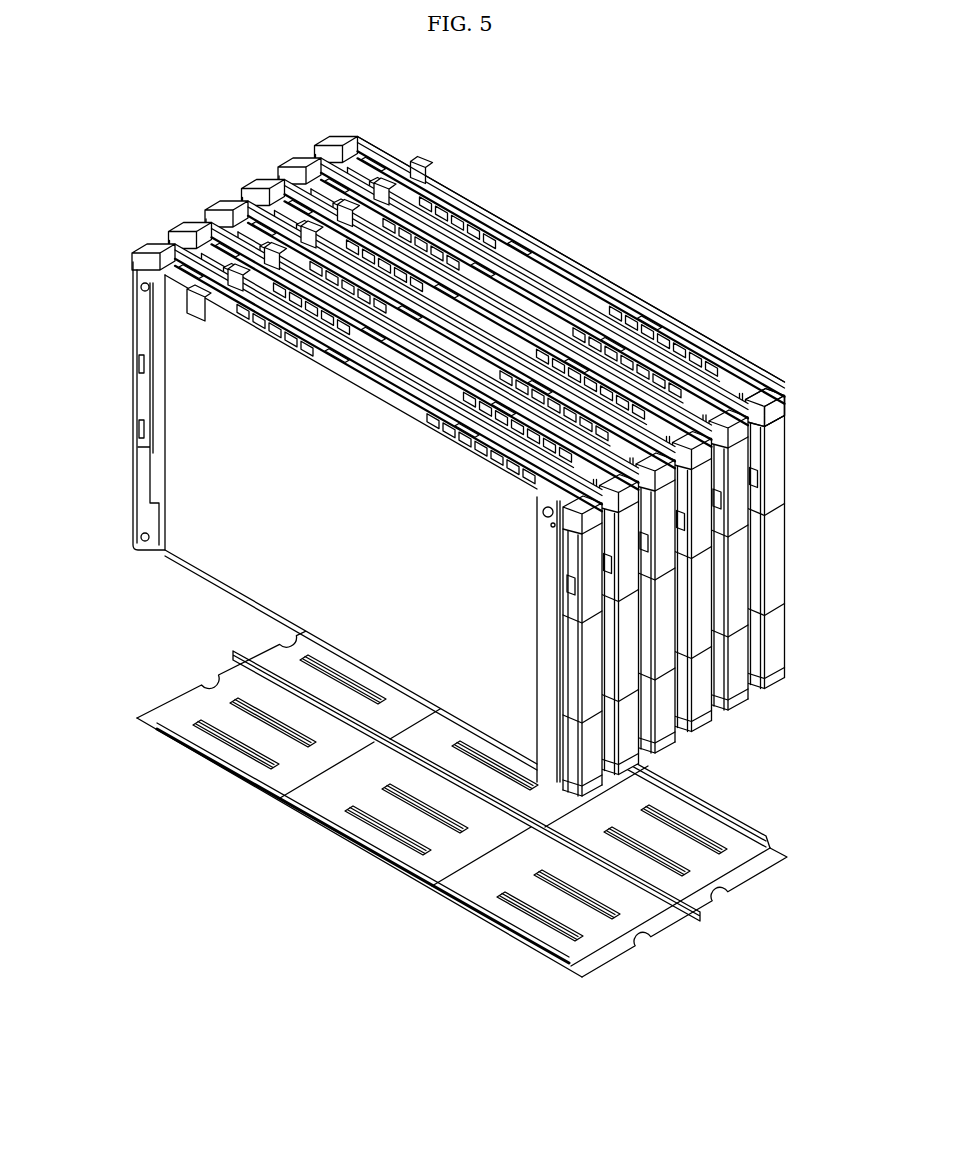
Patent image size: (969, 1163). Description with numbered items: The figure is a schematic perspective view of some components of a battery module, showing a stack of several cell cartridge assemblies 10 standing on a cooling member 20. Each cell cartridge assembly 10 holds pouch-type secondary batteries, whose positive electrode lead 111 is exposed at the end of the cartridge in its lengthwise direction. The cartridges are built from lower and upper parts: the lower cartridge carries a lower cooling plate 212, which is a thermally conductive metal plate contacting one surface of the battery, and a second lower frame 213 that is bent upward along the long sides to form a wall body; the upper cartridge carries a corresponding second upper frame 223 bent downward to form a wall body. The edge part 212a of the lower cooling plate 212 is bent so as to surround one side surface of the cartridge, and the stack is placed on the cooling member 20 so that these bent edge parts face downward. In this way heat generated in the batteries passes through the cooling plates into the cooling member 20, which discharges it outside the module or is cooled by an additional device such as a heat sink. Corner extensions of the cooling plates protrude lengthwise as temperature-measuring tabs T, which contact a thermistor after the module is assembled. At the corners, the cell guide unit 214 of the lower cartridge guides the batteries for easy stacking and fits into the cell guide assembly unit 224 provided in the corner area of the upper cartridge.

The cell cartridge assembly 10 is at (460, 440).
The cooling member 20 is at (265, 775).
The positive electrode lead 111 is at (786, 549).
The lower cooling plate 212 is at (178, 405).
The edge part of the lower cooling plate 212a is at (197, 583).
The second lower frame 213 is at (515, 250).
The cell guide unit 214 is at (761, 393).
The second upper frame 223 is at (581, 275).
The cell guide assembly unit 224 is at (780, 399).
The temperature-measuring tab T is at (145, 470).